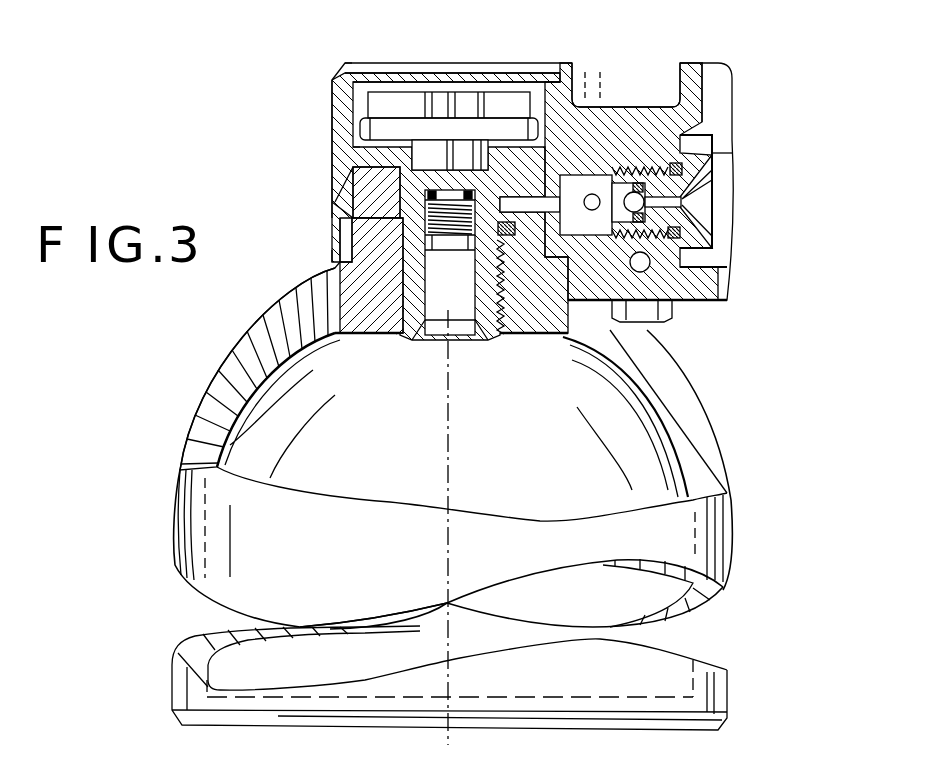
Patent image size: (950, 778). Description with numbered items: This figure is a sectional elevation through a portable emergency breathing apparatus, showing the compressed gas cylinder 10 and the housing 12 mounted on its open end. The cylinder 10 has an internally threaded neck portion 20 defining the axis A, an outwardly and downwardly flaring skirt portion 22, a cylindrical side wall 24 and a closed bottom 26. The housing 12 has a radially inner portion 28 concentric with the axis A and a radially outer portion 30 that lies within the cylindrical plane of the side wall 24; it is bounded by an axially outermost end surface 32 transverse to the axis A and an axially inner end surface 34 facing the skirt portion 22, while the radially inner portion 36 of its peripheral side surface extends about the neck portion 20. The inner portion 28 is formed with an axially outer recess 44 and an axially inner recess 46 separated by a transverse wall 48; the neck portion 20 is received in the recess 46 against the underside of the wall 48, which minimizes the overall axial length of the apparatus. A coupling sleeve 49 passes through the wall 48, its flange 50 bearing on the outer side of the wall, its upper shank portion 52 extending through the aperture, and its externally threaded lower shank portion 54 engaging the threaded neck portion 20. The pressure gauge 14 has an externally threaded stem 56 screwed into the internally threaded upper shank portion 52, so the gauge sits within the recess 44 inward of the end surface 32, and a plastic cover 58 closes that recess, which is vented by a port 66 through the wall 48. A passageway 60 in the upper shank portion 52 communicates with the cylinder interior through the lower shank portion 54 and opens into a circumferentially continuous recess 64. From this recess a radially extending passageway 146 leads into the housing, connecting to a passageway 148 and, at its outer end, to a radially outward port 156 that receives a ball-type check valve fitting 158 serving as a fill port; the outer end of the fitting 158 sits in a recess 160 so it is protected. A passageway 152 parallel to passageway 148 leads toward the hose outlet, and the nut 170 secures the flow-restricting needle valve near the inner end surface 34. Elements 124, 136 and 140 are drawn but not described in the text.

The cylinder 10 is at (222, 345).
The housing 12 is at (762, 80).
The pressure gauge 14 is at (345, 52).
The neck portion 20 is at (398, 258).
The skirt portion 22 is at (700, 404).
The cylindrical side wall 24 is at (712, 529).
The closed bottom 26 is at (537, 698).
The radially inner portion 28 is at (318, 110).
The radially outer portion 30 is at (747, 110).
The axially outermost end surface 32 is at (553, 63).
The axially inner end surface 34 is at (693, 300).
The radially inner portion of peripheral side surface 36 is at (337, 90).
The axially outer recess 44 is at (366, 80).
The axially inner recess 46 is at (334, 218).
The wall 48 is at (343, 202).
The coupling sleeve 49 is at (510, 135).
The flange 50 is at (360, 152).
The upper shank portion 52 is at (376, 192).
The externally threaded lower shank portion 54 is at (440, 322).
The externally threaded stem 56 is at (455, 243).
The plastic cover 58 is at (430, 78).
The passageway 60 is at (519, 240).
The circumferentially continuous recess 64 is at (383, 240).
The port 66 is at (352, 182).
The recess 124 is at (625, 83).
The column 136 is at (678, 83).
The flange 140 is at (706, 61).
The radially extending passageway 146 is at (548, 200).
The passageway 148 is at (598, 195).
The passageway 152 is at (650, 260).
The radially outward extending port 156 is at (629, 265).
The check valve fitting 158 is at (728, 198).
The recess 160 is at (714, 148).
The nut 170 is at (672, 322).
The axis A is at (446, 408).